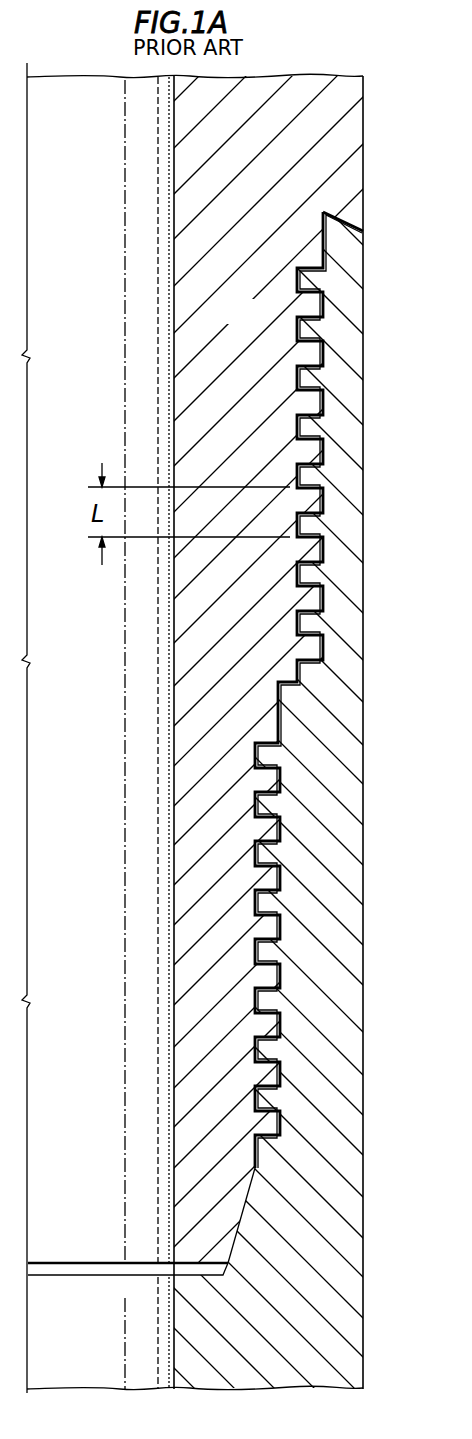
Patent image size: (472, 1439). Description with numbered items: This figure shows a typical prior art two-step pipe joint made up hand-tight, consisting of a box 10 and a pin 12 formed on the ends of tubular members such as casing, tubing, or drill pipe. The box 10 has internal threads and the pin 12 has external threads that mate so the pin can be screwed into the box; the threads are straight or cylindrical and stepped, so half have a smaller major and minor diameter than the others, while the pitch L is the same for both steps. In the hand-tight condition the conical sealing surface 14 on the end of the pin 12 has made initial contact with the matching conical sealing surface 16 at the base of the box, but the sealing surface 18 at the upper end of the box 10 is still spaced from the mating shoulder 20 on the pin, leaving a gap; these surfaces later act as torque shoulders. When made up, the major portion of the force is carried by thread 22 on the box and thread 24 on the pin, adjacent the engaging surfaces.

The box 10 is at (343, 752).
The pin 12 is at (185, 417).
The conical sealing surface 14 is at (245, 1230).
The conical sealing surface 16 is at (243, 1207).
The sealing surface 18 is at (335, 221).
The shoulder 20 is at (346, 236).
The thread 22 is at (298, 288).
The thread 24 is at (308, 307).